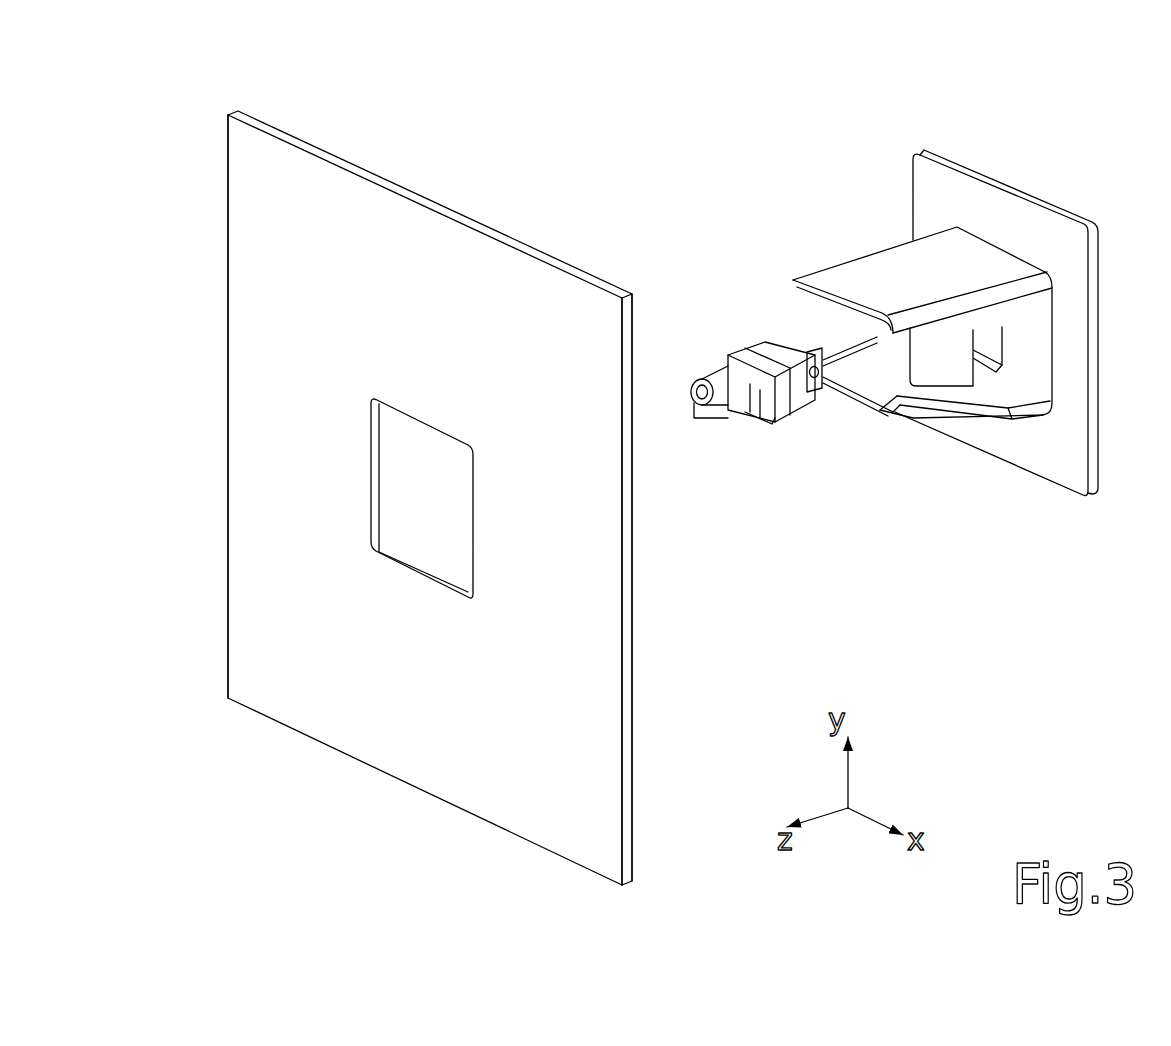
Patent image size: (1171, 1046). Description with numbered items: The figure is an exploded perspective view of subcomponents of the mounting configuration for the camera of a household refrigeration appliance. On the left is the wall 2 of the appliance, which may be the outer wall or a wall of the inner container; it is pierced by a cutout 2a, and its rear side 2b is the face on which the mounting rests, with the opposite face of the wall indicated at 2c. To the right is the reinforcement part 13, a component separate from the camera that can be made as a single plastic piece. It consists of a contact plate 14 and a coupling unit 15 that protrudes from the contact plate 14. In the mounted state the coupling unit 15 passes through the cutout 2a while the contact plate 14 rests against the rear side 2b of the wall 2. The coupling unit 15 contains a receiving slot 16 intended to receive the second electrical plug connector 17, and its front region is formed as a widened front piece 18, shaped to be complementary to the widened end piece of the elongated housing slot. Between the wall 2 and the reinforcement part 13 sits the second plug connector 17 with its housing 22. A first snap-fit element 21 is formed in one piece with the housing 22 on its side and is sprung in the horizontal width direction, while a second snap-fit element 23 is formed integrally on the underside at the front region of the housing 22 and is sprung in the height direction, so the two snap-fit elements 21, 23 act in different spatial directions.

The wall 2 is at (348, 215).
The cutout 2a is at (430, 482).
The rear side 2b is at (632, 633).
The front side of wall 2c is at (250, 675).
The reinforcement part 13 is at (922, 142).
The contact plate 14 is at (1018, 227).
The coupling unit 15 is at (868, 250).
The receiving slot 16 is at (888, 372).
The second electrical plug connector 17 is at (757, 430).
The widened front piece 18 is at (1005, 428).
The first snap-fit element 21 is at (795, 345).
The housing 22 is at (732, 345).
The second snap-fit element 23 is at (707, 435).